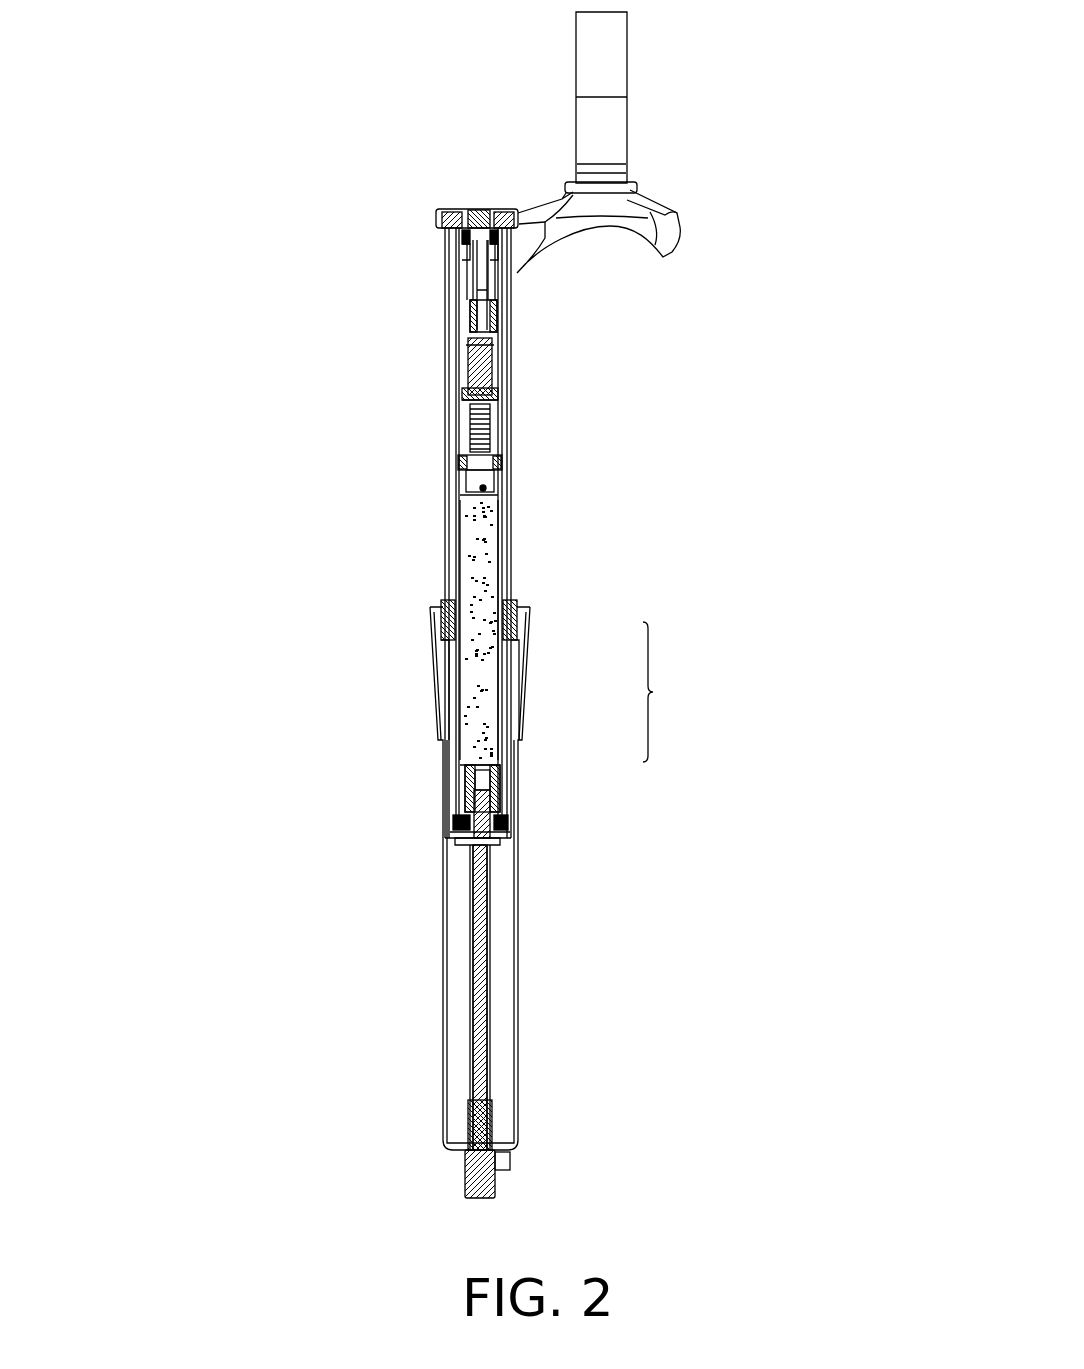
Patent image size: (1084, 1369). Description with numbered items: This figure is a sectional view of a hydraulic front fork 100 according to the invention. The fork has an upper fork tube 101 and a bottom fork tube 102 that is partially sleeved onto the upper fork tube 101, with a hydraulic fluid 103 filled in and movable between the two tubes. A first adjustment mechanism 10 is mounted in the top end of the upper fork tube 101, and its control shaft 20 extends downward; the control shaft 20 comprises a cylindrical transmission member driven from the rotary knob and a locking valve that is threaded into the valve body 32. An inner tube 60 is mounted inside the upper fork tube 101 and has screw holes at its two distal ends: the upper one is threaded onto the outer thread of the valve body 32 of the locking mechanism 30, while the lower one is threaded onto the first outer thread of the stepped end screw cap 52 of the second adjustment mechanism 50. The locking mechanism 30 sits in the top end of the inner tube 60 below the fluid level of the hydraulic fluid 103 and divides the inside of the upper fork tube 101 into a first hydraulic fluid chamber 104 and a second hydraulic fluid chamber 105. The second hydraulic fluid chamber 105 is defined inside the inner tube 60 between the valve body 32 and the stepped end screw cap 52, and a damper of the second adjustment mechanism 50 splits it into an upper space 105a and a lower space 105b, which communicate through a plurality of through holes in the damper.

The hydraulic front fork 100 is at (632, 142).
The first adjustment mechanism 10 is at (457, 208).
The control shaft 20 is at (468, 313).
The upper fork tube 101 is at (453, 356).
The hydraulic fluid 103 is at (500, 325).
The locking mechanism 30 is at (467, 436).
The first hydraulic fluid chamber 104 is at (500, 425).
The valve body 32 is at (458, 465).
The inner tube 60 is at (458, 582).
The upper space 105a is at (495, 702).
The lower space 105b is at (500, 790).
The second hydraulic fluid chamber 105 is at (678, 692).
The stepped end screw cap 52 is at (455, 822).
The second adjustment mechanism 50 is at (493, 998).
The bottom fork tube 102 is at (447, 1000).